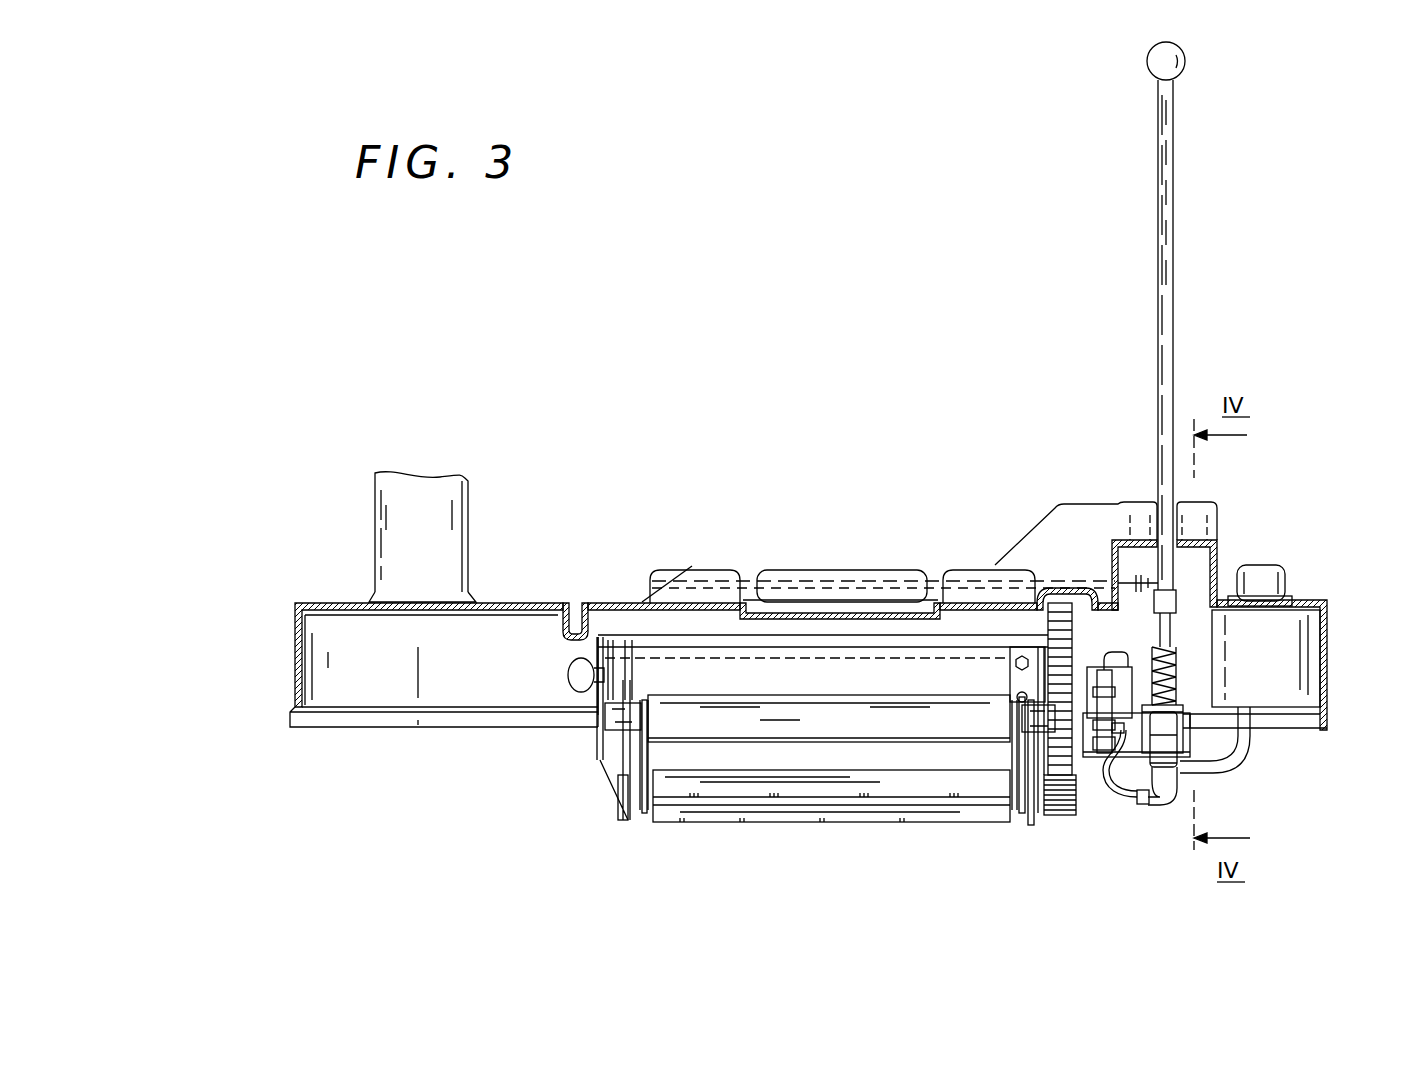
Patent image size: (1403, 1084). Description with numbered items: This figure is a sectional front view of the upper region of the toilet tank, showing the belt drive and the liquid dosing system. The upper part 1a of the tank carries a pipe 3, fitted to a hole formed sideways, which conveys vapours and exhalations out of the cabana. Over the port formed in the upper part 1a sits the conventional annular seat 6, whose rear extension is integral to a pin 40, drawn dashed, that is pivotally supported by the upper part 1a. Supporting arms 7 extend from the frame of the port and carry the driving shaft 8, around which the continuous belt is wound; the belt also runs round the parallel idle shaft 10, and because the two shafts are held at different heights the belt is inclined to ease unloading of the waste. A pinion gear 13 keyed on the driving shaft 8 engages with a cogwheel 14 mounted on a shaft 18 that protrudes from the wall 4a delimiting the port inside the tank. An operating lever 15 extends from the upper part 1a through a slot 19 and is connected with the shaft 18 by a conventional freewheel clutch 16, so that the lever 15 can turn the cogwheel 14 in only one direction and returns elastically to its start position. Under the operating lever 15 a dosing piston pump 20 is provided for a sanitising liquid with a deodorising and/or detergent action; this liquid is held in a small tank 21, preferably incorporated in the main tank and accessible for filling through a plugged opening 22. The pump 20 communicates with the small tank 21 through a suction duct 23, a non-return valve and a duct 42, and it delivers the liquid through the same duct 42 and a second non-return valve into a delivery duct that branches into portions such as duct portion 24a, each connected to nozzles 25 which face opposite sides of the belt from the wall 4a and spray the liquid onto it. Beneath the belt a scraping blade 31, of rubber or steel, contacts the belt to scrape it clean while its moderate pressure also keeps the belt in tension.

The upper part 1a is at (365, 700).
The pipe 3 is at (395, 503).
The wall 4a is at (1032, 818).
The annular seat 6 is at (747, 590).
The supporting arms 7 is at (637, 677).
The driving shaft 8 is at (1025, 815).
The idle shaft 10 is at (612, 712).
The pinion gear 13 is at (1070, 815).
The cogwheel 14 is at (1045, 622).
The operating lever 15 is at (1176, 254).
The freewheel clutch 16 is at (1110, 637).
The shaft 18 is at (1045, 690).
The slot 19 is at (1182, 530).
The dosing piston pump 20 is at (1172, 800).
The small tank 21 is at (1290, 652).
The plugged opening 22 is at (1268, 572).
The suction duct 23 is at (1257, 744).
The duct portion 24a is at (570, 680).
The nozzles 25 is at (610, 667).
The scraping blade 31 is at (762, 800).
The pin 40 is at (838, 585).
The duct 42 is at (1105, 792).